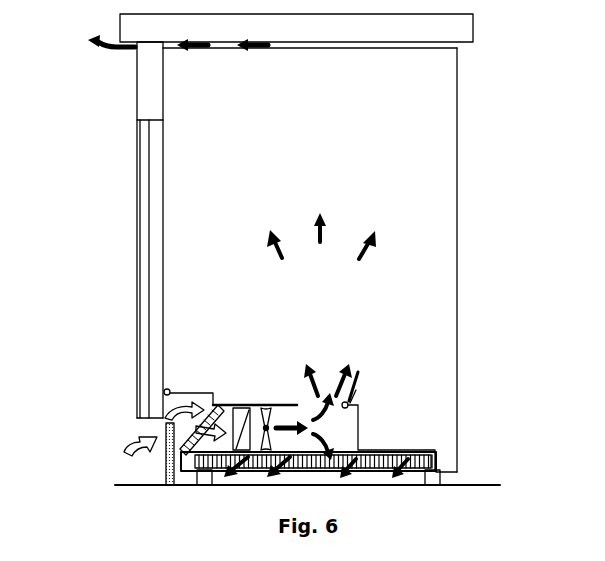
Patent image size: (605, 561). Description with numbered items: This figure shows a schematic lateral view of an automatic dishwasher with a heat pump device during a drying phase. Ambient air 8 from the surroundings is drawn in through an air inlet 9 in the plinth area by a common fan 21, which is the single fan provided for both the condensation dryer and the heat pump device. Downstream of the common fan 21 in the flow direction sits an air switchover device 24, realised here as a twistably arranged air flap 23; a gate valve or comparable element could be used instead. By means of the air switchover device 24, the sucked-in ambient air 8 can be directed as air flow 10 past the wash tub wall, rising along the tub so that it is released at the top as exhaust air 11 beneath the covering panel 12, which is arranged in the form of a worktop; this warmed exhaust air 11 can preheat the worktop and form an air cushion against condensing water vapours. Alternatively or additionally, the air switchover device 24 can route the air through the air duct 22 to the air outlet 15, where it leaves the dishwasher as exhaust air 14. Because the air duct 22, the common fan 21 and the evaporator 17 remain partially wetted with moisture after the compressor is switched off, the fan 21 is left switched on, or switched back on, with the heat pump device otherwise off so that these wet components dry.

The ambient air 8 is at (128, 448).
The air inlet 9 is at (165, 416).
The air flow 10 is at (368, 253).
The exhaust air 11 is at (188, 52).
The covering panel 12 is at (296, 28).
The exhaust air 14 is at (417, 476).
The air outlet 15 is at (438, 455).
The evaporator 17 is at (232, 406).
The common fan 21 is at (268, 406).
The air duct 22 is at (360, 440).
The air flap 23 is at (352, 398).
The air switchover device 24 is at (390, 389).